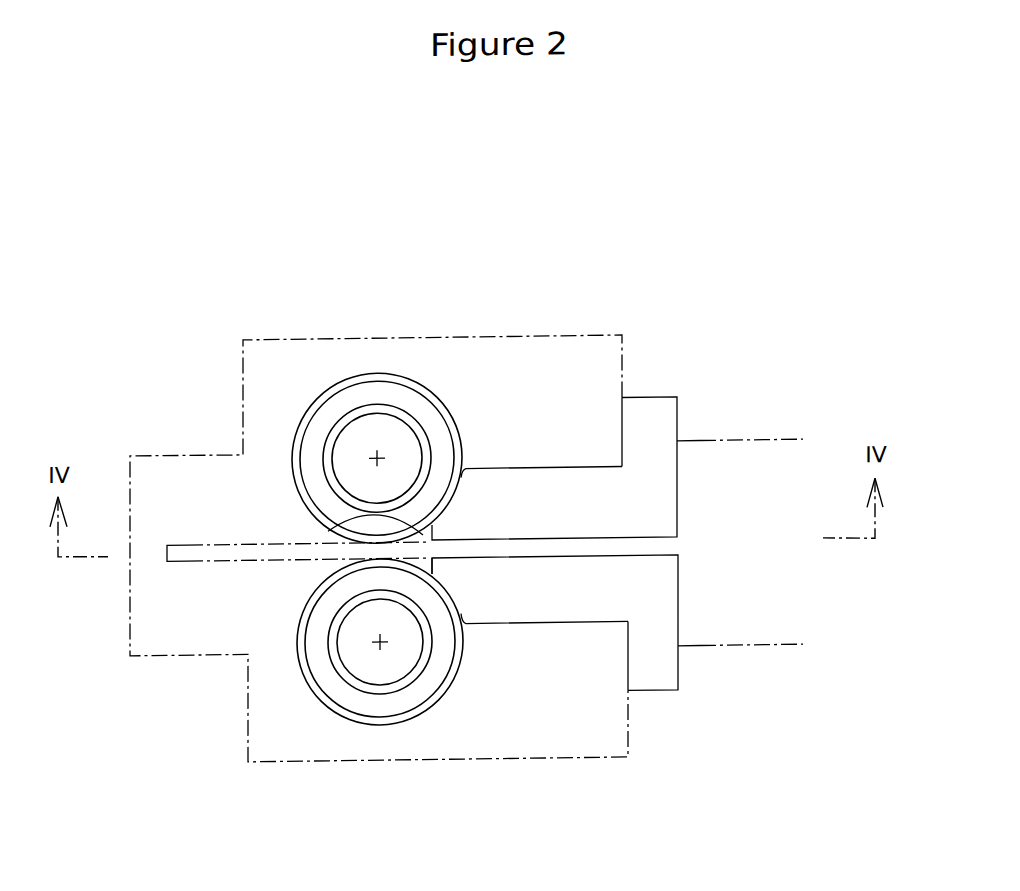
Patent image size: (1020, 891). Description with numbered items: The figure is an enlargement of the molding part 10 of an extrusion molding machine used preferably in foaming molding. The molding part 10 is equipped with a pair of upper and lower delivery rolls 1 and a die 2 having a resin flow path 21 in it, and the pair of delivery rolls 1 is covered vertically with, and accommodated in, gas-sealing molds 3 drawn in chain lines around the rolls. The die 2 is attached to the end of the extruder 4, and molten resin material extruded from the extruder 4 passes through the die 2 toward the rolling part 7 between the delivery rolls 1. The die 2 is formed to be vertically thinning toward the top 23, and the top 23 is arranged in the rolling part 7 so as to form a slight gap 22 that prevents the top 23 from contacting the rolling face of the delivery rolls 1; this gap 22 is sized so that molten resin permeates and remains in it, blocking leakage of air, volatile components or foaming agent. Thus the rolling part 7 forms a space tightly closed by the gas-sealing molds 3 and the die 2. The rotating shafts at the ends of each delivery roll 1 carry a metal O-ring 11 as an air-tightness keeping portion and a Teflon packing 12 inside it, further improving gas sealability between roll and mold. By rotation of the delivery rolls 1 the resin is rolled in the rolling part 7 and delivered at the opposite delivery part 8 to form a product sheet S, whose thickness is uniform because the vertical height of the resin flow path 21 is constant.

The delivery rolls 1 is at (303, 416).
The die 2 is at (657, 413).
The gas-sealing molds 3 is at (412, 338).
The extruder 4 is at (740, 439).
The rolling part 7 is at (328, 530).
The delivery part 8 is at (322, 567).
The molding part 10 is at (636, 321).
The metal O-ring 11 is at (403, 427).
The Teflon packing 12 is at (437, 437).
The resin flow path 21 is at (586, 549).
The gap 22 is at (465, 470).
The top 23 is at (448, 567).
The product sheet S is at (178, 560).